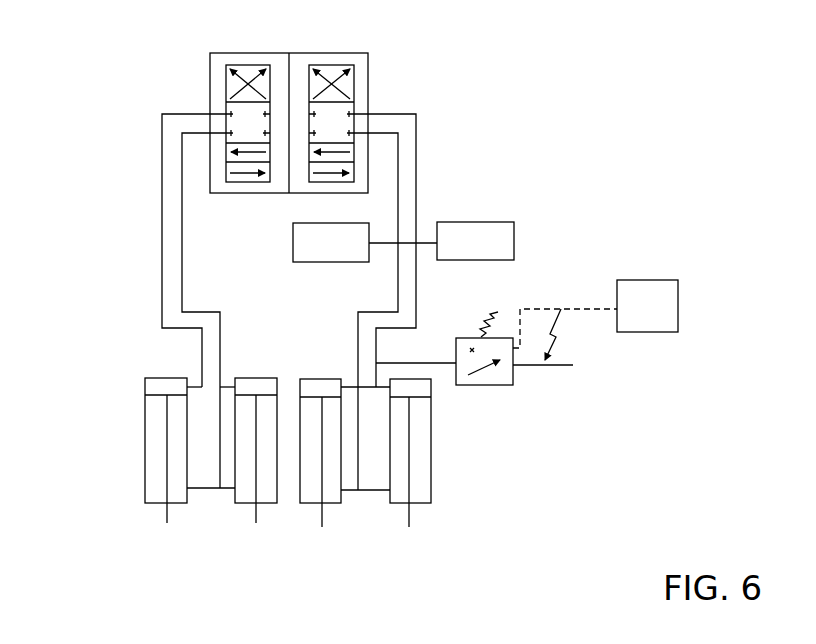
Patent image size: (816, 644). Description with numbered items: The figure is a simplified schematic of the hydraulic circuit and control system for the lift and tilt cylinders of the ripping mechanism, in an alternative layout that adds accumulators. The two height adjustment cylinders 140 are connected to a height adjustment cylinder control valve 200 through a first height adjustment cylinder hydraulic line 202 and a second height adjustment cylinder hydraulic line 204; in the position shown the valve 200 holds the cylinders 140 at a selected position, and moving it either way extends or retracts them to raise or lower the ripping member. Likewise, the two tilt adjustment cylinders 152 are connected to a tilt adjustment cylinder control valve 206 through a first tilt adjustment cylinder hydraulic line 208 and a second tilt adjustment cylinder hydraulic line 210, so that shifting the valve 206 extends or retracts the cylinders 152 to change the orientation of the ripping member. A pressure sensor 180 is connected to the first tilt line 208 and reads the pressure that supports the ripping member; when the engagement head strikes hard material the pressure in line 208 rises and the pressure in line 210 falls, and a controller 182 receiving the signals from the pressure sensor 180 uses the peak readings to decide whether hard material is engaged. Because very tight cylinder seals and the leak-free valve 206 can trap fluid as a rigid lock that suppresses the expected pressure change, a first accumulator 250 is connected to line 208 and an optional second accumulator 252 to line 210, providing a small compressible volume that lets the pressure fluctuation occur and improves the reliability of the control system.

The height adjustment cylinders 140 is at (145, 427).
The tilt adjustment cylinders 152 is at (420, 455).
The pressure sensor 180 is at (500, 330).
The controller 182 is at (652, 280).
The height adjustment cylinder control valve 200 is at (238, 52).
The first height adjustment cylinder hydraulic line 202 is at (162, 228).
The second height adjustment cylinder hydraulic line 204 is at (181, 197).
The tilt adjustment cylinder control valve 206 is at (336, 53).
The first tilt adjustment cylinder hydraulic line 208 is at (416, 205).
The second tilt adjustment cylinder hydraulic line 210 is at (399, 180).
The first accumulator 250 is at (493, 232).
The second accumulator 252 is at (313, 252).